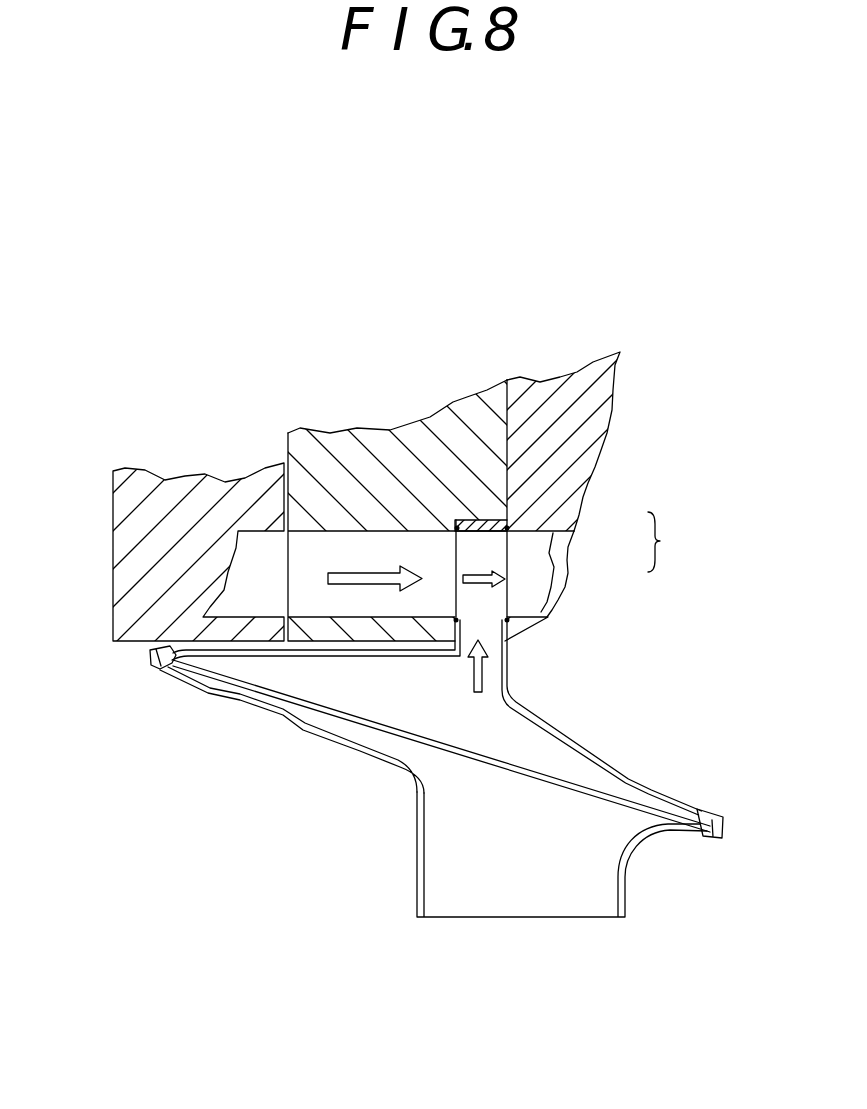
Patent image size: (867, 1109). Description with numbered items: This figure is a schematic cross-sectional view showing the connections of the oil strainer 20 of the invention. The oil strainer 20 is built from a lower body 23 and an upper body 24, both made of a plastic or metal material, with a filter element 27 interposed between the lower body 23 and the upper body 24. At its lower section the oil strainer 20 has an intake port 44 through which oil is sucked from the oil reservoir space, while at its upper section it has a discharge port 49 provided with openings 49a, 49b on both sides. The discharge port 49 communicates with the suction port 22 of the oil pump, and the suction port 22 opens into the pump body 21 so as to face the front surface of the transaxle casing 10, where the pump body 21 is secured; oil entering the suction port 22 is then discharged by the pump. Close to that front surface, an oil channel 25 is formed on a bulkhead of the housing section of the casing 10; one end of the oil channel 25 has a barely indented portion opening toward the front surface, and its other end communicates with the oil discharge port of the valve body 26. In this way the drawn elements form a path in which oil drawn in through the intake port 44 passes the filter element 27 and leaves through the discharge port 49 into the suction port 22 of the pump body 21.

The transaxle casing 10 is at (360, 432).
The pump body 21 is at (560, 413).
The valve body 26 is at (118, 548).
The discharge port 49 is at (674, 542).
The opening 49a is at (507, 565).
The opening 49b is at (460, 597).
The suction port 22 is at (537, 597).
The upper body 24 is at (570, 735).
The filter element 27 is at (567, 783).
The oil channel 25 is at (325, 605).
The lower body 23 is at (378, 760).
The oil strainer 20 is at (433, 825).
The intake port 44 is at (515, 907).